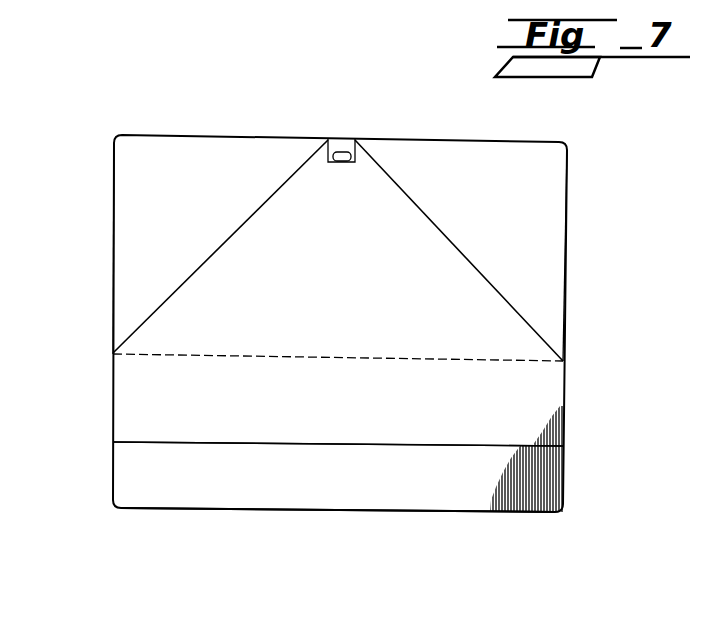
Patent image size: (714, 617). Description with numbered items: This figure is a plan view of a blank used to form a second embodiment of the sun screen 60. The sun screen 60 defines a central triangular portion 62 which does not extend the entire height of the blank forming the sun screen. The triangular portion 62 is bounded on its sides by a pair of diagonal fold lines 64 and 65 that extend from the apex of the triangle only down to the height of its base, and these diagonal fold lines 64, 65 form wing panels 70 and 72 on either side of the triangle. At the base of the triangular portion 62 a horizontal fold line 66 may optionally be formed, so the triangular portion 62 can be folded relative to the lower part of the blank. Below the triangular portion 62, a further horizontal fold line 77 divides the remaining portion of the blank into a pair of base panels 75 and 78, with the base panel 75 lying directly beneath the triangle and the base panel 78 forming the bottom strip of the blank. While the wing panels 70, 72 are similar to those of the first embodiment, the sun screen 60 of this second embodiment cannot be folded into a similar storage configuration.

The sun screen 60 is at (88, 318).
The central triangular portion 62 is at (328, 251).
The diagonal fold line 64 is at (448, 237).
The diagonal fold line 65 is at (262, 205).
The horizontal fold line 66 is at (473, 362).
The wing panel 70 is at (531, 246).
The wing panel 72 is at (142, 241).
The base panel 75 is at (324, 425).
The horizontal fold line 77 is at (225, 441).
The base panel 78 is at (208, 492).